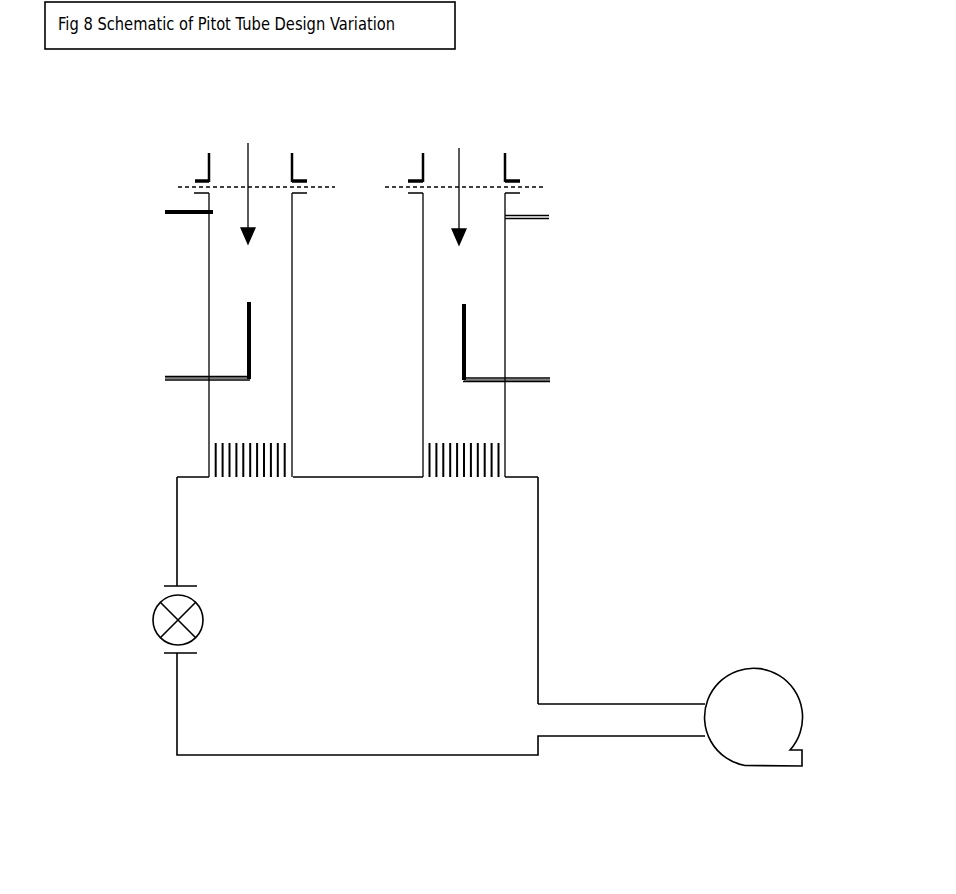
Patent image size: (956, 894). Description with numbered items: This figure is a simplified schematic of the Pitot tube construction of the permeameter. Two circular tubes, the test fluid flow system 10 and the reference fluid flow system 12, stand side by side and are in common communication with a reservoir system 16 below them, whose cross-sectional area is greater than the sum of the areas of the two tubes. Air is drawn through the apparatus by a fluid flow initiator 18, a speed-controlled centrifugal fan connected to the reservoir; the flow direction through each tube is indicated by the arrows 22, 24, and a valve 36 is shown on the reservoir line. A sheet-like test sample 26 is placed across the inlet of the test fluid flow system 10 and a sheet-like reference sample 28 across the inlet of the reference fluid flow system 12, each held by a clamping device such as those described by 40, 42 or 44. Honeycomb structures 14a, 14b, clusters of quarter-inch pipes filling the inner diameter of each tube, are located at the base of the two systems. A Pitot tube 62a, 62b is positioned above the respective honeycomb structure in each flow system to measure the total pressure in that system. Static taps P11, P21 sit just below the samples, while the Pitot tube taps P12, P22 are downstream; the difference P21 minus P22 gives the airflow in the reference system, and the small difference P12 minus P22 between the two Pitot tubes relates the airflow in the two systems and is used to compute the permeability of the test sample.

The test fluid flow system 10 is at (159, 282).
The reference fluid flow system 12 is at (505, 253).
The honeycomb structure 14a is at (233, 458).
The honeycomb structure 14b is at (483, 458).
The reservoir system 16 is at (468, 617).
The fluid flow initiator 18 is at (753, 697).
The flow direction into first tube 22 is at (246, 180).
The flow direction into second tube 24 is at (462, 182).
The test sample 26 is at (177, 187).
The reference sample 28 is at (542, 187).
The valve 36 is at (157, 610).
The clamping device 40 is at (212, 135).
The clamping device 42 is at (212, 135).
The clamping device 44 is at (207, 180).
The Pitot tube 62a is at (247, 330).
The Pitot tube 62b is at (466, 330).
The first tube upstream pressure tap P11 is at (174, 214).
The Pitot tube pressure P12 is at (192, 383).
The reference fluid flow system pressure P21 is at (543, 218).
The Pitot tube pressure P22 is at (523, 385).